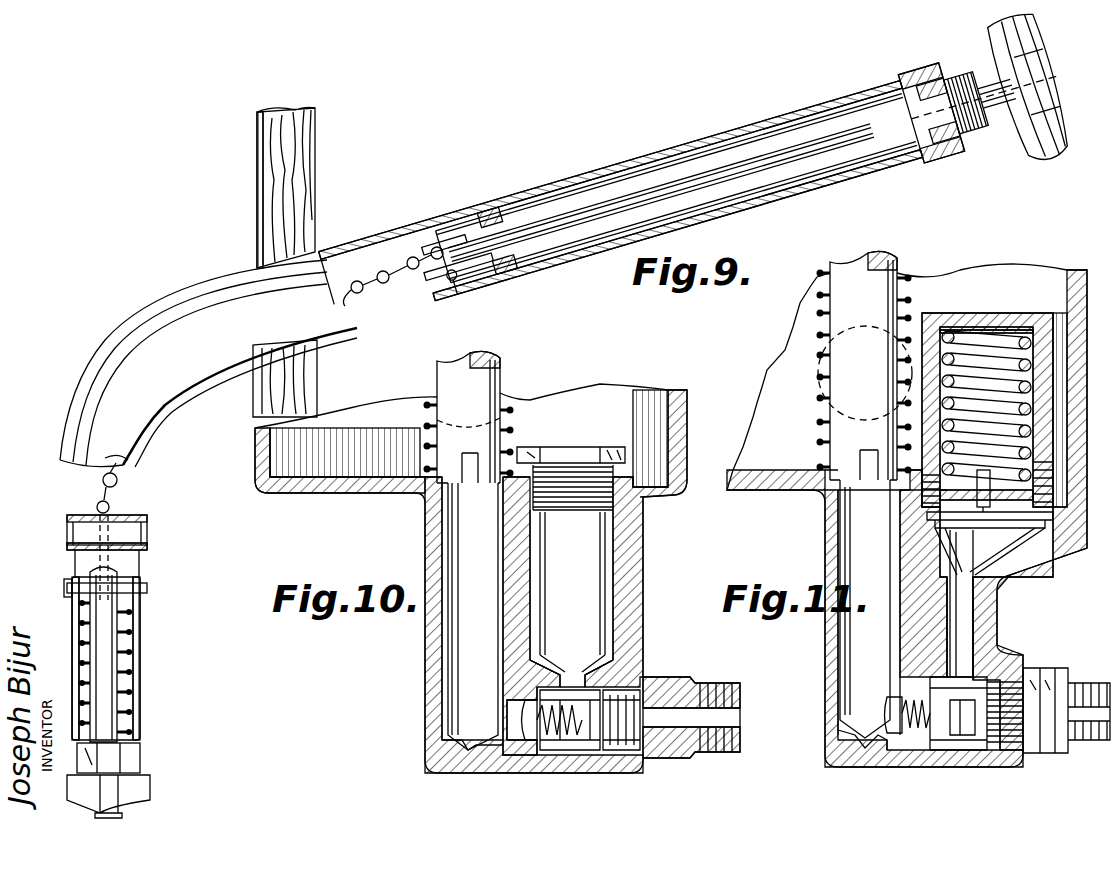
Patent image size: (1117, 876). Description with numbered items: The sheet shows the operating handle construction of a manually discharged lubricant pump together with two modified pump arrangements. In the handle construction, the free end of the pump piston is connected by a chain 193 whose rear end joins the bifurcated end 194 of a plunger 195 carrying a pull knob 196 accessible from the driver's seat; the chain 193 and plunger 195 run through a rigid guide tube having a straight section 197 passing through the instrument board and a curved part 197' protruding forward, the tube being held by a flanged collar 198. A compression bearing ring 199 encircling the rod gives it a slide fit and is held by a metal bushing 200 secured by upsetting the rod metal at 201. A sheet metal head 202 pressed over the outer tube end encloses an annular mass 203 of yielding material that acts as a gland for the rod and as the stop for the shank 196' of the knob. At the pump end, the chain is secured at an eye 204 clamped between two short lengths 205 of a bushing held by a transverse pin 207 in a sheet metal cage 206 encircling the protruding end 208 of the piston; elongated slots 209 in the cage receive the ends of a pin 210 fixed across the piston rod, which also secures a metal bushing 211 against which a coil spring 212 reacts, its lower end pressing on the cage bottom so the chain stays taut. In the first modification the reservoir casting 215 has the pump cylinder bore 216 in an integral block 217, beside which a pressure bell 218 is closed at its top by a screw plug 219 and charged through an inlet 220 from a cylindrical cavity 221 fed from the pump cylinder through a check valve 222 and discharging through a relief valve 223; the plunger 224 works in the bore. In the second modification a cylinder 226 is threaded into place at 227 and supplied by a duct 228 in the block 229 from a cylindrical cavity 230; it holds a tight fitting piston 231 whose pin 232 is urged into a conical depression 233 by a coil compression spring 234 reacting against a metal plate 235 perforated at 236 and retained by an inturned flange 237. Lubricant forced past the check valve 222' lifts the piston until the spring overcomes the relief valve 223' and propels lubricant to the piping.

In FIG. 9, the chain 193 is at (365, 295).
In FIG. 9, the bifurcated end 194 is at (455, 278).
In FIG. 9, the plunger 195 is at (710, 160).
In FIG. 9, the pull knob 196 is at (1034, 98).
In FIG. 9, the shank 196' is at (985, 126).
In FIG. 9, the straight section 197 is at (621, 205).
In FIG. 9, the curved part 197' is at (185, 363).
In FIG. 9, the flanged collar 198 is at (252, 247).
In FIG. 9, the compression bearing ring 199 is at (490, 207).
In FIG. 9, the metal bushing 200 is at (503, 203).
In FIG. 9, the upset metal 201 is at (517, 253).
In FIG. 9, the sheet metal head 202 is at (882, 82).
In FIG. 9, the annular mass of yielding material 203 is at (915, 88).
In FIG. 9, the eye 204 is at (110, 558).
In FIG. 9, the short lengths of bushing 205 is at (125, 510).
In FIG. 9, the sheet metal cage 206 is at (140, 668).
In FIG. 9, the transverse pin 207 is at (83, 533).
In FIG. 9, the protruding end of pump piston 208 is at (107, 637).
In FIG. 9, the elongated slots 209 is at (78, 627).
In FIG. 9, the pin 210 is at (70, 590).
In FIG. 9, the metal bushing 211 is at (142, 556).
In FIG. 9, the coil spring 212 is at (135, 697).
In FIG. 10, the reservoir casting 215 is at (328, 497).
In FIG. 10, the pump cylinder bore 216 is at (460, 630).
In FIG. 10, the integral block 217 is at (520, 603).
In FIG. 10, the pressure bell 218 is at (603, 630).
In FIG. 10, the screw plug 219 is at (580, 457).
In FIG. 10, the inlet 220 is at (583, 680).
In FIG. 10, the cylindrical cavity 221 is at (590, 737).
In FIG. 10, the check valve 222 is at (541, 756).
In FIG. 11, the check valve 222' is at (954, 741).
In FIG. 10, the relief valve 223 is at (692, 712).
In FIG. 11, the relief valve 223' is at (1066, 731).
In FIG. 10, the plunger 224 is at (477, 383).
In FIG. 11, the cylinder 226 is at (927, 430).
In FIG. 11, the threaded connection 227 is at (927, 503).
In FIG. 11, the duct 228 is at (963, 603).
In FIG. 11, the block 229 is at (927, 617).
In FIG. 11, the cylindrical cavity 230 is at (933, 638).
In FIG. 11, the piston 231 is at (927, 488).
In FIG. 11, the pin 232 is at (1005, 522).
In FIG. 11, the conical depression 233 is at (1020, 543).
In FIG. 11, the coil compression spring 234 is at (967, 357).
In FIG. 11, the metal plate 235 is at (957, 317).
In FIG. 11, the perforation 236 is at (977, 320).
In FIG. 11, the inturned flange 237 is at (1038, 300).